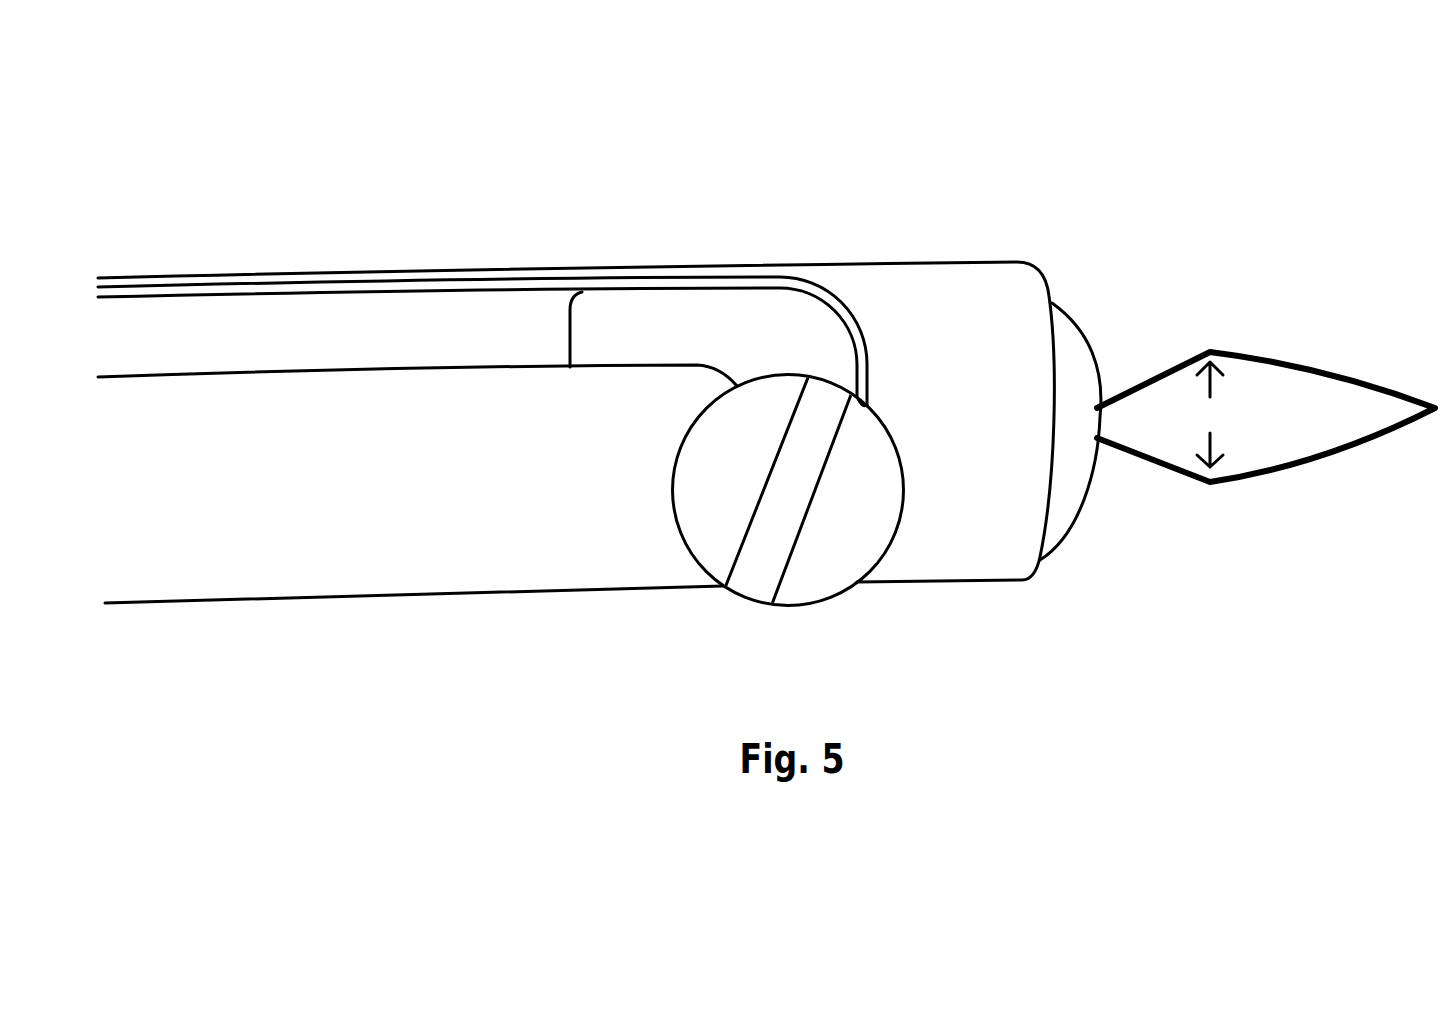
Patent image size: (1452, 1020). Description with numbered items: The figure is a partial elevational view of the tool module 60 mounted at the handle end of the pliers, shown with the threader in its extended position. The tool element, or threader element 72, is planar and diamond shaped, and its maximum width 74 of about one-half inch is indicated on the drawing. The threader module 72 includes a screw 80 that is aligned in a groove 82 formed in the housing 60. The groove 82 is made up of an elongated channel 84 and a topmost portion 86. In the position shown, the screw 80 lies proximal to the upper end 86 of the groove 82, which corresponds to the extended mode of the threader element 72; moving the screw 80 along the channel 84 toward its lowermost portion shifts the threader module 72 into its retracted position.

The first tool module 60 is at (883, 265).
The threader element 72 is at (1300, 458).
The maximum width 74 is at (1210, 414).
The screw 80 is at (817, 588).
The groove 82 is at (670, 288).
The elongated channel 84 is at (180, 330).
The topmost portion 86 is at (863, 338).